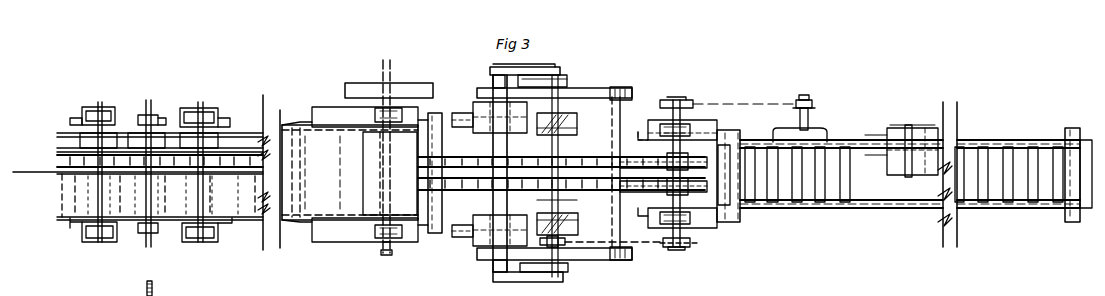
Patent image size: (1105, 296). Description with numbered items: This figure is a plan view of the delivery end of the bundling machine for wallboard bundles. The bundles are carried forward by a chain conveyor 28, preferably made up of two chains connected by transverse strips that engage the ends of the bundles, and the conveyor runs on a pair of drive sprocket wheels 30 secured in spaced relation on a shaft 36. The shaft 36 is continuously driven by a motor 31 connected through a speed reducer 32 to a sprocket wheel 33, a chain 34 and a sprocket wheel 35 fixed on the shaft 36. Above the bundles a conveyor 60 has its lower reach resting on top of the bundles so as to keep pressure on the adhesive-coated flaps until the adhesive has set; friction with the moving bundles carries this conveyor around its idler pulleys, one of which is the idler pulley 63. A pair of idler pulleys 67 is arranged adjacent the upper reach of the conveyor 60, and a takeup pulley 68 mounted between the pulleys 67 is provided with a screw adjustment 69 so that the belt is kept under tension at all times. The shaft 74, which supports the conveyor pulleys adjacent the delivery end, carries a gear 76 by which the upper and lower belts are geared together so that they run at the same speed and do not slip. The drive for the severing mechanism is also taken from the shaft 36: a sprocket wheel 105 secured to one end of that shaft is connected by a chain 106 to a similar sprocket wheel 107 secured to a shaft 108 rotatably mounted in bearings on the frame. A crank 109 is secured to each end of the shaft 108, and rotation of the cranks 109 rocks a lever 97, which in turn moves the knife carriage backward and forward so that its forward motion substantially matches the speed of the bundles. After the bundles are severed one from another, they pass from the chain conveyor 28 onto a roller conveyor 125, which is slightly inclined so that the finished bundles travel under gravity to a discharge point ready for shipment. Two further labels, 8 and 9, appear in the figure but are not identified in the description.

The conveyor frame 8 is at (151, 195).
The drive frame 9 is at (542, 191).
The chain conveyor 28 is at (573, 185).
The drive sprocket wheel 30 is at (672, 188).
The motor 31 is at (905, 130).
The speed reducer 32 is at (825, 130).
The sprocket wheel 33 is at (813, 103).
The chain 34 is at (751, 104).
The sprocket wheel 35 is at (688, 103).
The shaft 36 is at (670, 117).
The conveyor 60 is at (322, 122).
The idler pulley 63 is at (370, 217).
The idler pulleys 67 is at (80, 224).
The takeup pulley 68 is at (135, 172).
The screw adjustment 69 is at (150, 112).
The shaft 74 is at (388, 250).
The gear 76 is at (417, 83).
The lever 97 is at (492, 70).
The sprocket wheel 105 is at (687, 243).
The chain 106 is at (657, 247).
The sprocket wheel 107 is at (573, 243).
The shaft 108 is at (560, 204).
The crank 109 is at (543, 78).
The roller conveyor 125 is at (880, 202).